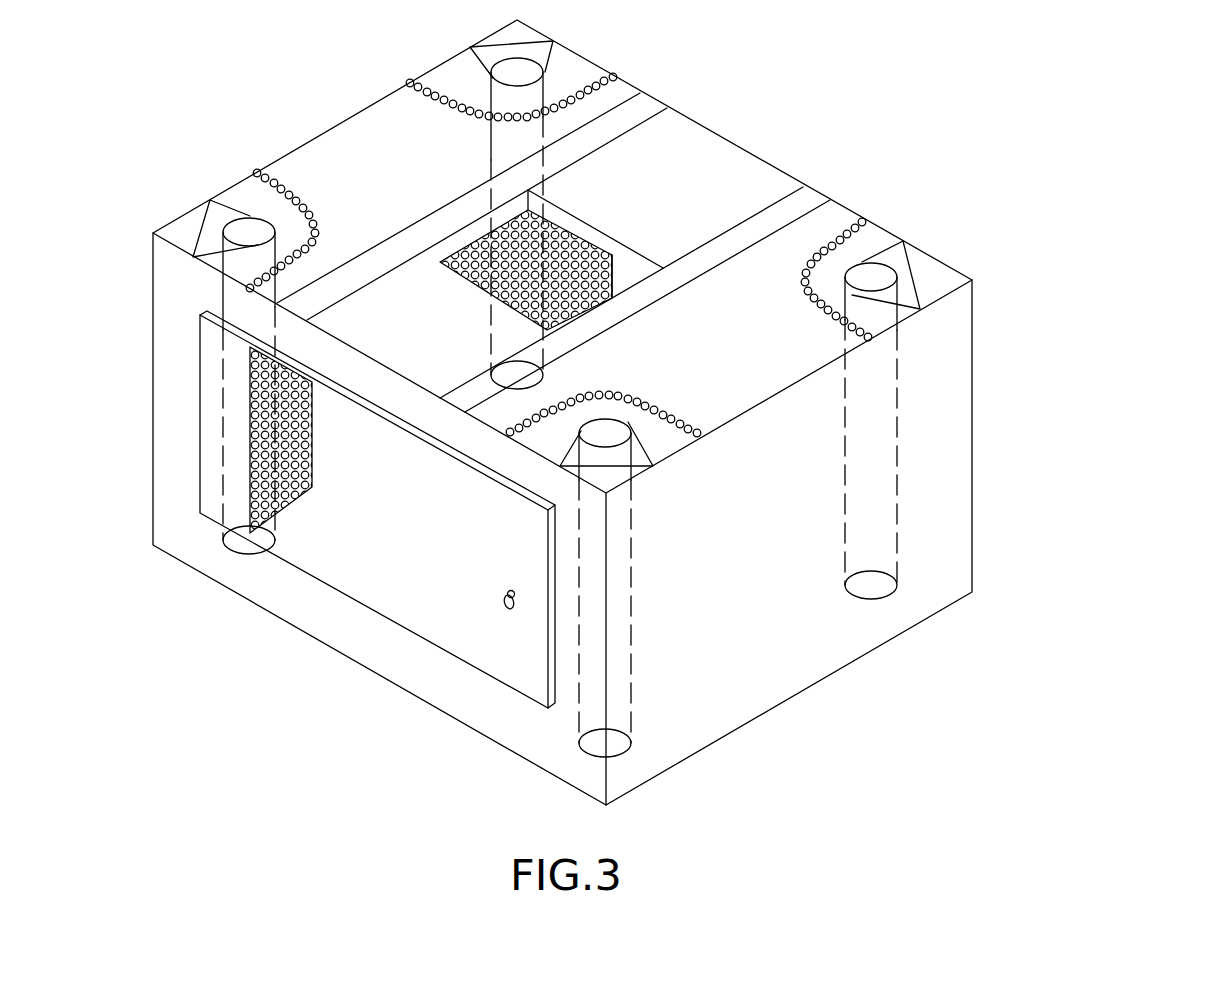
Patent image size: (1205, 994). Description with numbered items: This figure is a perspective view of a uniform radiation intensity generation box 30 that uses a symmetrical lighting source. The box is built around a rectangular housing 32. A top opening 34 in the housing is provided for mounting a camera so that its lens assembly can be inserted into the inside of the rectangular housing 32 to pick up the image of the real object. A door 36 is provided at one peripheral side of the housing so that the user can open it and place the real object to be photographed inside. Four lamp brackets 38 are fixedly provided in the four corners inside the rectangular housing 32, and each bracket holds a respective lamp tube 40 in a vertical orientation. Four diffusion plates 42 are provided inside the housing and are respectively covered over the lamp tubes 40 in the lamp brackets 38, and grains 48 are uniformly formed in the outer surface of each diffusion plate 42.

The uniform radiation intensity generation box 30 is at (1020, 175).
The rectangular housing 32 is at (962, 476).
The top opening 34 is at (623, 280).
The door 36 is at (398, 565).
The lamp bracket 38 is at (487, 54).
The lamp tube 40 is at (546, 71).
The diffusion plate 42 is at (613, 77).
The grains 48 is at (417, 86).